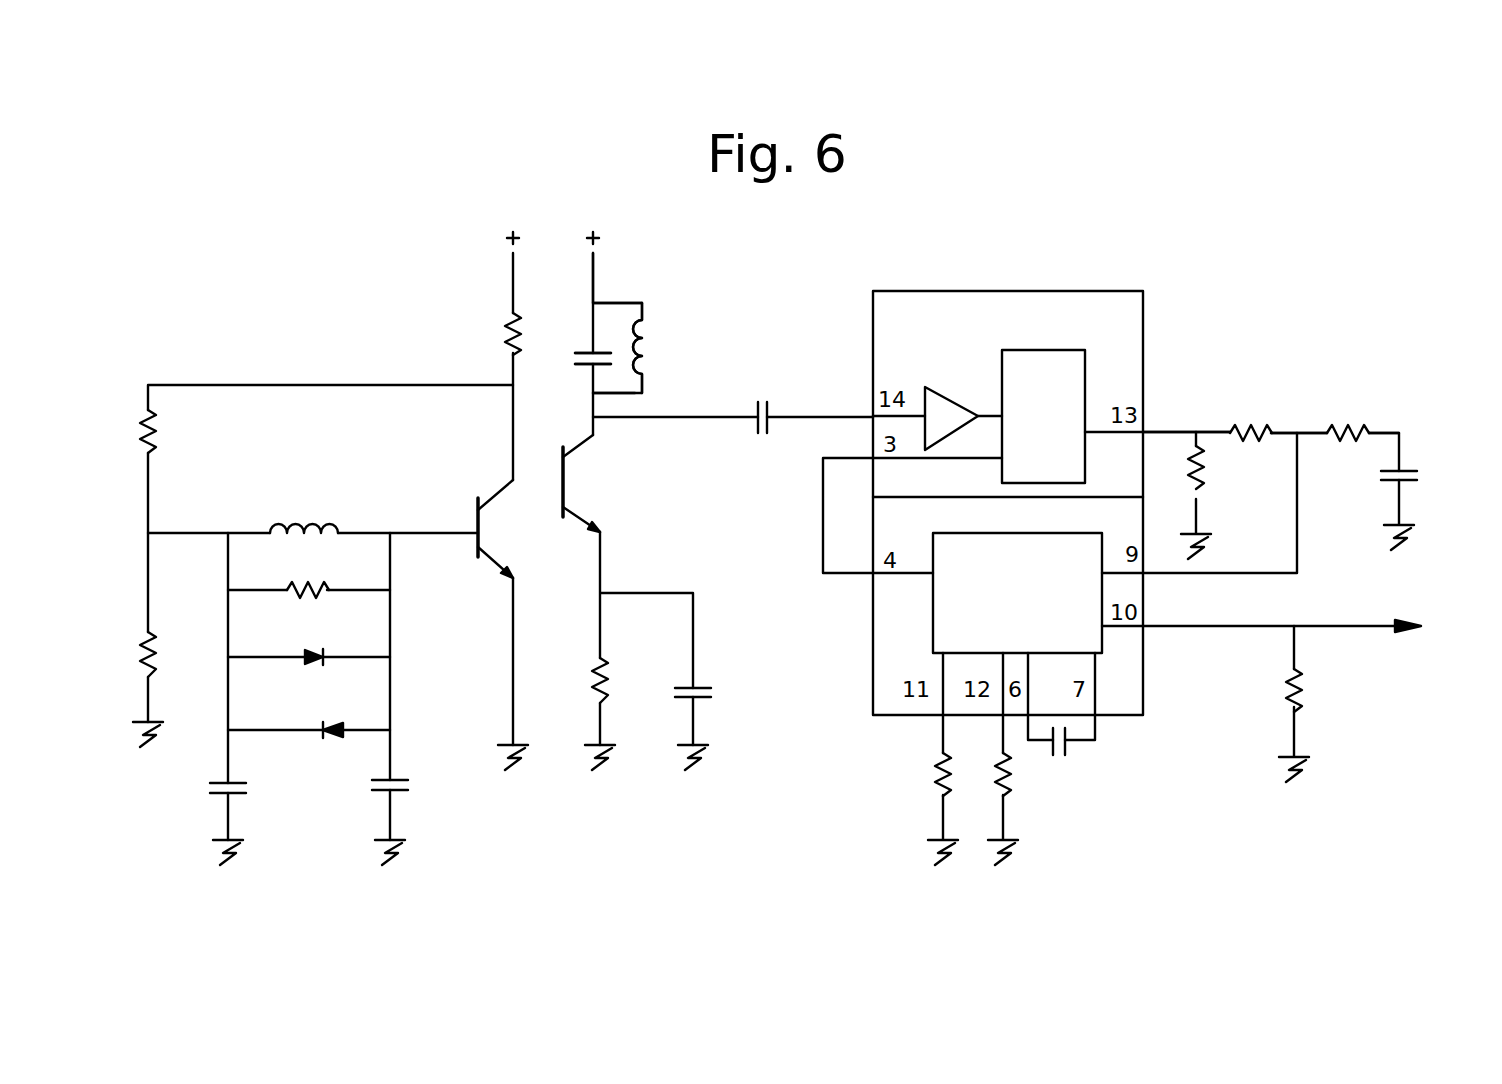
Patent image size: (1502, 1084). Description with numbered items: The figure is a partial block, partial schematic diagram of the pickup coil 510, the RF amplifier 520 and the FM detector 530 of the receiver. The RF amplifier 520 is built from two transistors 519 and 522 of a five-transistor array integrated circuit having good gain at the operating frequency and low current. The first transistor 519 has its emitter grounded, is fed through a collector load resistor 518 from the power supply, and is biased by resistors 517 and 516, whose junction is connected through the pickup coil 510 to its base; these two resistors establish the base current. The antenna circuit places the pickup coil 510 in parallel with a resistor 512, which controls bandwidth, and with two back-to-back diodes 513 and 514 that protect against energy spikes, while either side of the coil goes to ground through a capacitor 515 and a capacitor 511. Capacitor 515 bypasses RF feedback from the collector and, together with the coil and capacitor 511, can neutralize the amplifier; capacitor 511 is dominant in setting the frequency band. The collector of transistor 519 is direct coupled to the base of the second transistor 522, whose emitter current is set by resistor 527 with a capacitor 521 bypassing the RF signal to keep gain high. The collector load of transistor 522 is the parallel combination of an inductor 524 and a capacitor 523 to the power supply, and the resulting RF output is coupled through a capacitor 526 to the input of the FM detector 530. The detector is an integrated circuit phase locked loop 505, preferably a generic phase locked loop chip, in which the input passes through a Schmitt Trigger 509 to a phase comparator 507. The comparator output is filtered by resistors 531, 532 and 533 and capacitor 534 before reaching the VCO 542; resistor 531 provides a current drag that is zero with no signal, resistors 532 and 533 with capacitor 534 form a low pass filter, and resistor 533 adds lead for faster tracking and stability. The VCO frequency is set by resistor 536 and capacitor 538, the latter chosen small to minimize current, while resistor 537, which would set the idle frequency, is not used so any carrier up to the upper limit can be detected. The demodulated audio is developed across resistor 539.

The integrated circuit phase locked loop 505 is at (978, 291).
The phase comparator 507 is at (1026, 350).
The Schmitt Trigger 509 is at (945, 395).
The pickup coil 510 is at (280, 528).
The capacitor 511 is at (402, 792).
The resistor 512 is at (298, 588).
The diode 513 is at (324, 650).
The diode 514 is at (324, 722).
The capacitor 515 is at (246, 792).
The resistor 516 is at (152, 655).
The resistor 517 is at (154, 442).
The resistor 518 is at (508, 343).
The transistor 519 is at (483, 536).
The RF amplifier 520 is at (585, 303).
The capacitor 521 is at (697, 688).
The transistor 522 is at (568, 490).
The capacitor 523 is at (588, 366).
The inductor 524 is at (655, 372).
The capacitor 526 is at (764, 412).
The resistor 527 is at (604, 688).
The FM detector 530 is at (1240, 343).
The resistor 531 is at (1204, 475).
The resistor 532 is at (1240, 425).
The resistor 533 is at (1347, 425).
The capacitor 534 is at (1418, 482).
The resistor 536 is at (940, 770).
The resistor 537 is at (1010, 783).
The capacitor 538 is at (1068, 750).
The resistor 539 is at (1302, 700).
The VCO 542 is at (1010, 533).